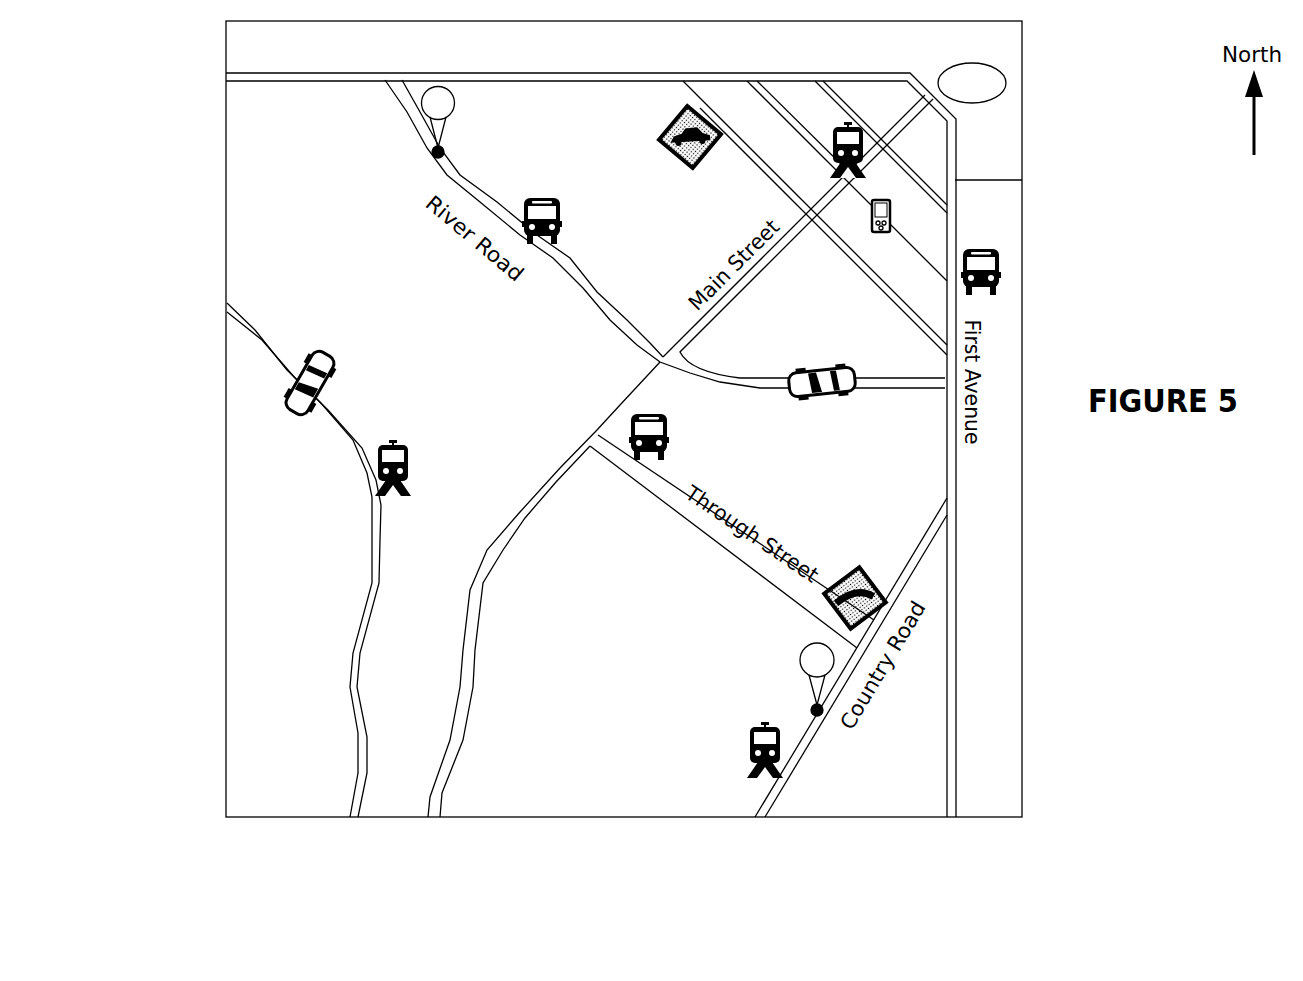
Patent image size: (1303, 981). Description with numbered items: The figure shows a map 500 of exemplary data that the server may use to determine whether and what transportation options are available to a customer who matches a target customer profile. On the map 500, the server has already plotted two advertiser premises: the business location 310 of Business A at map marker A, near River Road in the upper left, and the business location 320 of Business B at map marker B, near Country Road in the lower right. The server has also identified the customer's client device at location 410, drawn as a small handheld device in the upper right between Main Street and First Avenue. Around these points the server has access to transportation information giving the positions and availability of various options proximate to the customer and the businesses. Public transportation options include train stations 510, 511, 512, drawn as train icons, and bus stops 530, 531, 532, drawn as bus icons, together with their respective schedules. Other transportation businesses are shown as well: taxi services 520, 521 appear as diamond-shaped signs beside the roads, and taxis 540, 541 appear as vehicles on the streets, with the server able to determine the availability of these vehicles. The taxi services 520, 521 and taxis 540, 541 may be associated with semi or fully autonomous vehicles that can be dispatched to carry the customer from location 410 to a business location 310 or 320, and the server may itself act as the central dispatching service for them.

The business location 310 is at (432, 152).
The business location 320 is at (823, 710).
The location 410 is at (890, 231).
The map 500 is at (1094, 452).
The train station 510 is at (862, 165).
The train station 511 is at (782, 767).
The train station 512 is at (377, 492).
The taxi service 520 is at (712, 155).
The taxi service 521 is at (880, 612).
The bus stop 530 is at (1000, 278).
The bus stop 531 is at (668, 452).
The bus stop 532 is at (522, 242).
The taxi 540 is at (857, 383).
The taxi 541 is at (293, 395).